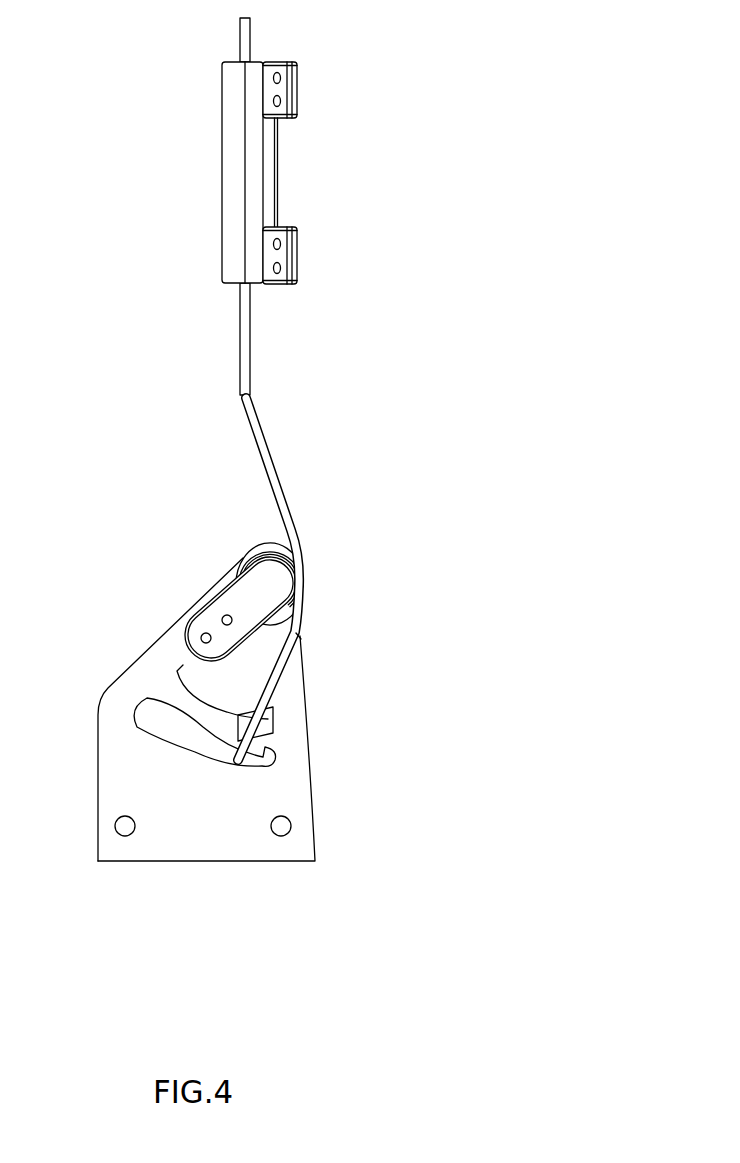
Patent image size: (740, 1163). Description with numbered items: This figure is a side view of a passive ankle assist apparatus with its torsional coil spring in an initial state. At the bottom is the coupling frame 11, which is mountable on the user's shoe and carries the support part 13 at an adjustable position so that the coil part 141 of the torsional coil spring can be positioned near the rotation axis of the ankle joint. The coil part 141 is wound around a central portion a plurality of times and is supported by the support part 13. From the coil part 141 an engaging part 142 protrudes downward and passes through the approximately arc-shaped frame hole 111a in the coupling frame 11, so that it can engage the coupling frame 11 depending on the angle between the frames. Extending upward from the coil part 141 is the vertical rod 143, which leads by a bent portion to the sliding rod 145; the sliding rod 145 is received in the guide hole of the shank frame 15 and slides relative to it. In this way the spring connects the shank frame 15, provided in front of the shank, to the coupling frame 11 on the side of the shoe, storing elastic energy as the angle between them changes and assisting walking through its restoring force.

The coupling frame 11 is at (212, 832).
The frame hole 111a is at (263, 748).
The support part 13 is at (267, 585).
The coil part 141 is at (304, 580).
The engaging part 142 is at (280, 684).
The vertical rod 143 is at (253, 437).
The sliding rod 145 is at (240, 37).
The shank frame 15 is at (222, 168).